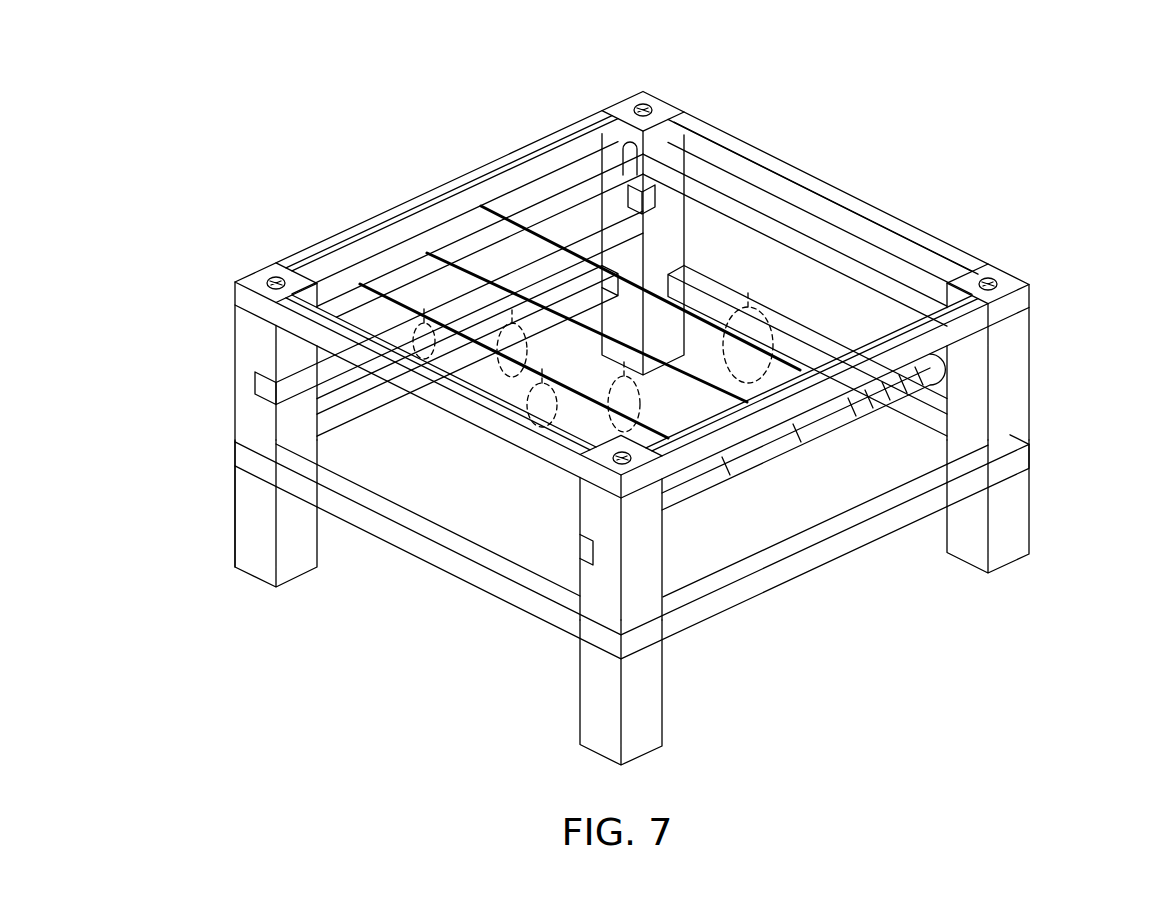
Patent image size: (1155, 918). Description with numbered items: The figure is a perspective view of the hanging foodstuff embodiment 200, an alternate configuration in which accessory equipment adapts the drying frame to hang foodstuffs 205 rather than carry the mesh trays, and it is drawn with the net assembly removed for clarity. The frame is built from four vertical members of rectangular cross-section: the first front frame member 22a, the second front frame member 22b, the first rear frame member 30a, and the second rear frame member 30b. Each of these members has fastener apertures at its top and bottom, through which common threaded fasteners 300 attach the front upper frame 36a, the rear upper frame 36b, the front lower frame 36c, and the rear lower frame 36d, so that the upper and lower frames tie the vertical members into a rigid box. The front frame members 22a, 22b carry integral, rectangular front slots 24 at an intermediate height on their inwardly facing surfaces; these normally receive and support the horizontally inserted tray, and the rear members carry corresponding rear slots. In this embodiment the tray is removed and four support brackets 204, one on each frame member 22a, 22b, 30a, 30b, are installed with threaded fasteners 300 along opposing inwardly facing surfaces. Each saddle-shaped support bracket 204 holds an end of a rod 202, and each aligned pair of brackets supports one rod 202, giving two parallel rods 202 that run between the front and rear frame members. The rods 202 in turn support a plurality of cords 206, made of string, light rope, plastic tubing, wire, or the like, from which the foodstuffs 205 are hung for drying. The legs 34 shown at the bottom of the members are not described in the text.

The hanging foodstuff embodiment 200 is at (307, 70).
The rod 202 is at (412, 268).
The support bracket 204 is at (630, 132).
The foodstuffs 205 is at (750, 374).
The cord 206 is at (495, 340).
The first front frame member 22a is at (247, 336).
The second front frame member 22b is at (597, 588).
The front slot 24 is at (255, 381).
The first rear frame member 30a is at (677, 170).
The second rear frame member 30b is at (1005, 406).
The leg 34 is at (245, 521).
The front upper frame 36a is at (440, 196).
The rear upper frame 36b is at (485, 186).
The front lower frame 36c is at (395, 530).
The rear lower frame 36d is at (712, 258).
The threaded fastener 300 is at (644, 102).